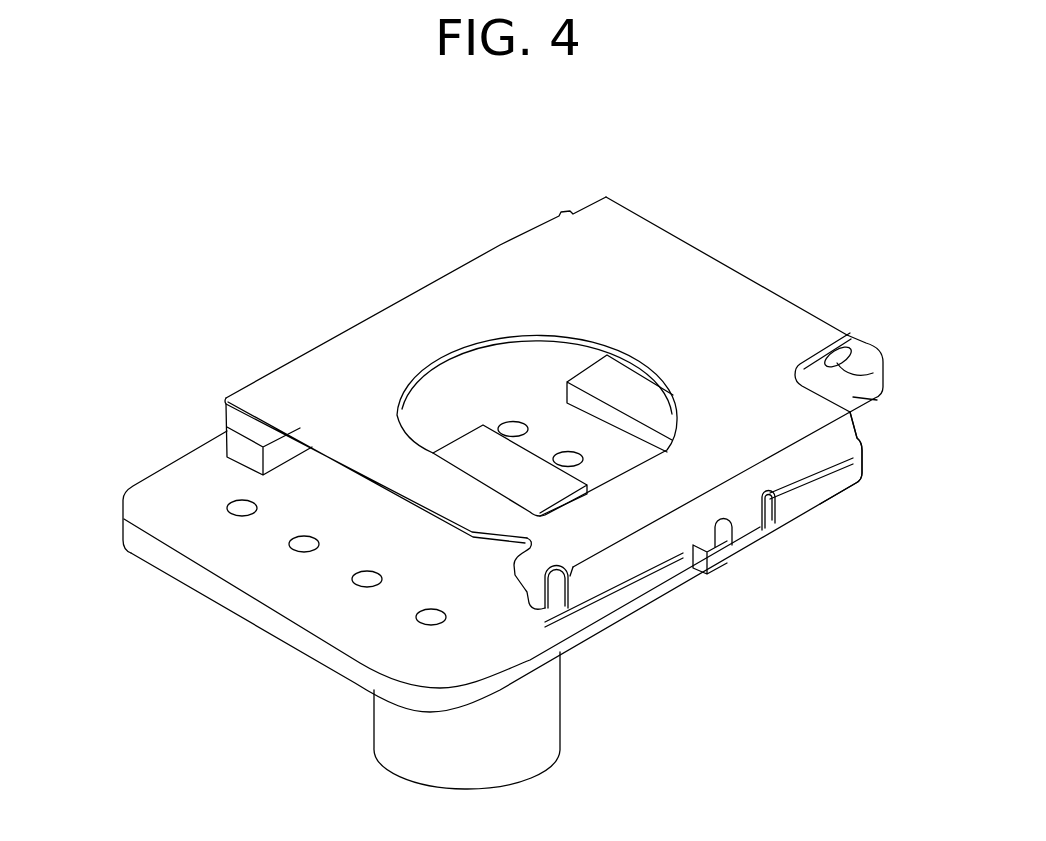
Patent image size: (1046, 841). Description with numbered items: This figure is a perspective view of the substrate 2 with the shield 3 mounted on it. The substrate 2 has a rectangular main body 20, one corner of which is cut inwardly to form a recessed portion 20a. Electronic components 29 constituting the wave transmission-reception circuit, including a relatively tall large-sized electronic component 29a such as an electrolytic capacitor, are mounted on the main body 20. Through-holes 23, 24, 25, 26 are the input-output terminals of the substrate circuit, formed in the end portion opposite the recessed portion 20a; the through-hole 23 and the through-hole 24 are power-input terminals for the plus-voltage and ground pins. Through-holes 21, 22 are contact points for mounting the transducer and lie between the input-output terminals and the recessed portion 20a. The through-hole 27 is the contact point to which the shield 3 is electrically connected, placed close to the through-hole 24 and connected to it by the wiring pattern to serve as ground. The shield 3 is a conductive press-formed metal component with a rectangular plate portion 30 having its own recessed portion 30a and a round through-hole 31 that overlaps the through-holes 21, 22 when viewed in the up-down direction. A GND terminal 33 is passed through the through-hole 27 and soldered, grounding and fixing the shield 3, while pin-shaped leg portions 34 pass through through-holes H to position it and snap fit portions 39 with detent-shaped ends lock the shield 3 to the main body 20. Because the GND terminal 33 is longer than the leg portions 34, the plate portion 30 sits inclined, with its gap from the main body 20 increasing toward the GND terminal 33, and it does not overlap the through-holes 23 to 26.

The substrate 2 is at (121, 479).
The shield 3 is at (757, 271).
The main body 20 is at (200, 463).
The recessed portion 20a is at (870, 402).
The through-hole 21 is at (508, 424).
The through-hole 22 is at (565, 457).
The through-hole 23 is at (243, 510).
The through-hole 24 is at (431, 615).
The through-hole 25 is at (302, 546).
The through-hole 26 is at (368, 580).
The through-hole 27 is at (543, 600).
The electronic components 29 is at (583, 373).
The large-sized electronic component 29a is at (470, 452).
The plate portion 30 is at (668, 247).
The recessed portion 30a is at (806, 382).
The through-hole 31 is at (457, 352).
The GND terminal 33 is at (530, 603).
The leg portion 34 is at (886, 378).
The snap fit portion 39 is at (760, 543).
The through-hole H is at (833, 345).